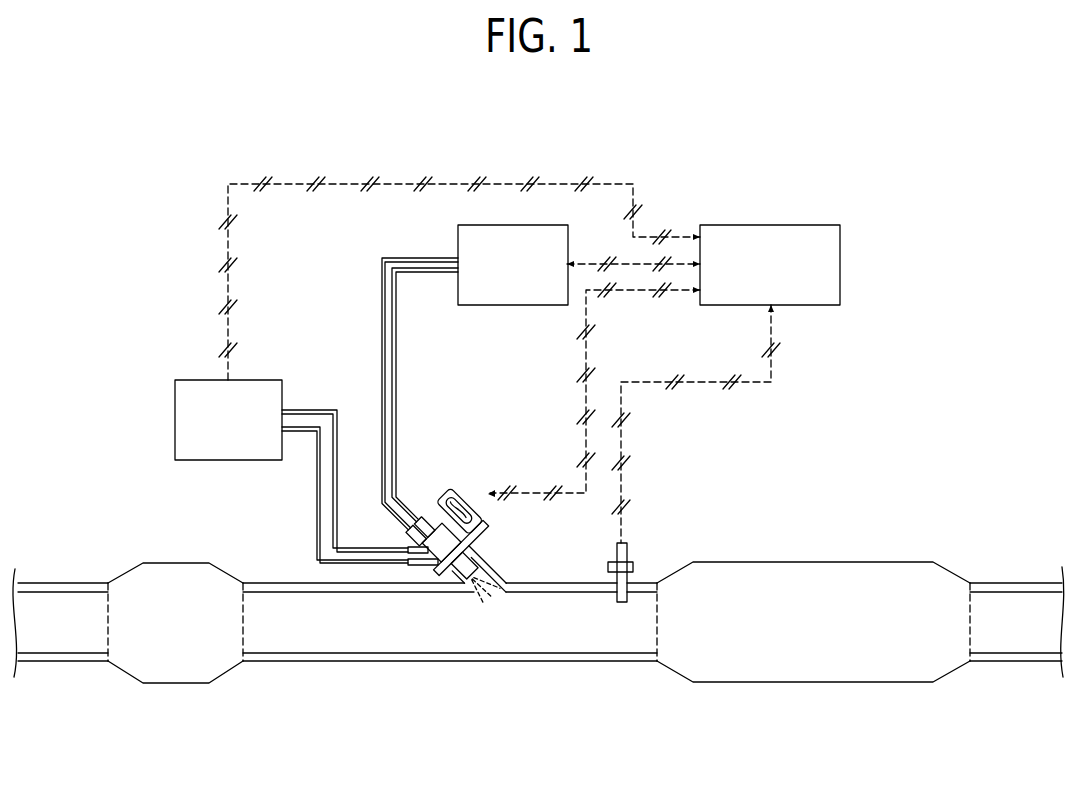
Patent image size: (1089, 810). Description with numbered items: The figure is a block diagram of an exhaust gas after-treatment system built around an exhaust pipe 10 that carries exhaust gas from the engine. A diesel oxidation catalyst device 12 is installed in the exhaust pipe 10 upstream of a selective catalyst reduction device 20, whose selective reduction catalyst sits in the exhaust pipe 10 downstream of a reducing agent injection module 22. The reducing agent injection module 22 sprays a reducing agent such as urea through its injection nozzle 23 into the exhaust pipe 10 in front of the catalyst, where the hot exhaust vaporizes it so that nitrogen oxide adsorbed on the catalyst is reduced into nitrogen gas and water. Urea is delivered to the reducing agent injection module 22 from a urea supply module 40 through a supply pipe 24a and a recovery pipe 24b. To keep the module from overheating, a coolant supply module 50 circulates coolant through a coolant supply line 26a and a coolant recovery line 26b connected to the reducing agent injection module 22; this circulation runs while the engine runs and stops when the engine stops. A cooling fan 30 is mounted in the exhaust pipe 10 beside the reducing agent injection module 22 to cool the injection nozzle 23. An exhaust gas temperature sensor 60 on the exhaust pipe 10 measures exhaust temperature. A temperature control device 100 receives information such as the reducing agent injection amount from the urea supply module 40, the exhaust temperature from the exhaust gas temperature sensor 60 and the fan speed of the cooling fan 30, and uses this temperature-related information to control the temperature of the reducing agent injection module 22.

The exhaust pipe 10 is at (62, 661).
The diesel oxidation catalyst device 12 is at (176, 683).
The selective catalyst reduction device 20 is at (825, 682).
The reducing agent injection module 22 is at (433, 548).
The injection nozzle 23 is at (471, 551).
The supply pipe 24a is at (386, 376).
The recovery pipe 24b is at (397, 423).
The coolant supply line 26a is at (318, 486).
The coolant recovery line 26b is at (334, 526).
The cooling fan 30 is at (458, 494).
The urea supply module 40 is at (512, 306).
The coolant supply module 50 is at (175, 420).
The exhaust gas temperature sensor 60 is at (630, 549).
The temperature control device 100 is at (843, 263).